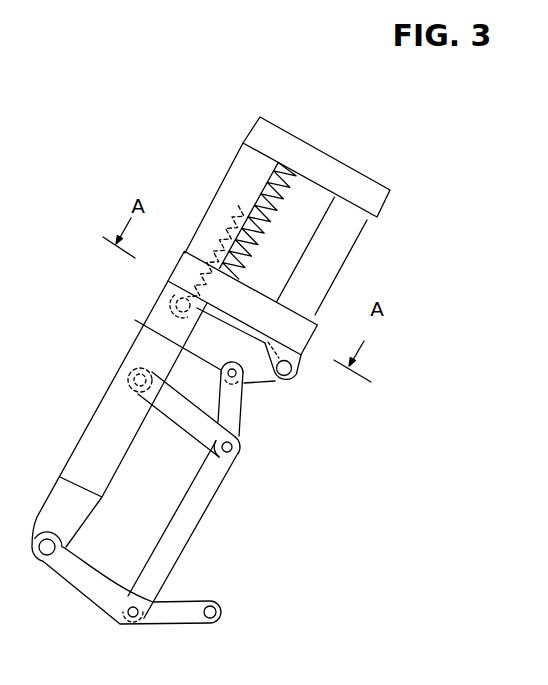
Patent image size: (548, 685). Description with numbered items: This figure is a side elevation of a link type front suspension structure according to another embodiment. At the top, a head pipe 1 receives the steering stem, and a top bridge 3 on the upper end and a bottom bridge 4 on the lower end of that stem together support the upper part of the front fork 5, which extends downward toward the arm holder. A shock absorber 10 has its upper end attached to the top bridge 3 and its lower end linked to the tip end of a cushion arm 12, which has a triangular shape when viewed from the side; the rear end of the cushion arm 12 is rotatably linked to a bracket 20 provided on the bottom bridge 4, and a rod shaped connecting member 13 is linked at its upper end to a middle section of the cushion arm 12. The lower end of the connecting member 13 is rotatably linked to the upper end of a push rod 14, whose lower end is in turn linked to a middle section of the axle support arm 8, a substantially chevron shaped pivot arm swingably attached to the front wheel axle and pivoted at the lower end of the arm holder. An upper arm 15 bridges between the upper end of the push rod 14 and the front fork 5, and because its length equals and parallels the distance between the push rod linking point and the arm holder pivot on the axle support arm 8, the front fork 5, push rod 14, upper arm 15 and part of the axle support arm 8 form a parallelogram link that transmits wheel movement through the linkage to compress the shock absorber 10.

The head pipe 1 is at (353, 230).
The top bridge 3 is at (356, 180).
The bottom bridge 4 is at (168, 279).
The front fork 5 is at (108, 408).
The axle support arm 8 is at (108, 598).
The shock absorber 10 is at (294, 180).
The cushion arm 12 is at (255, 370).
The connecting member 13 is at (236, 413).
The push rod 14 is at (192, 517).
The upper arm 15 is at (187, 422).
The bracket 20 is at (303, 377).